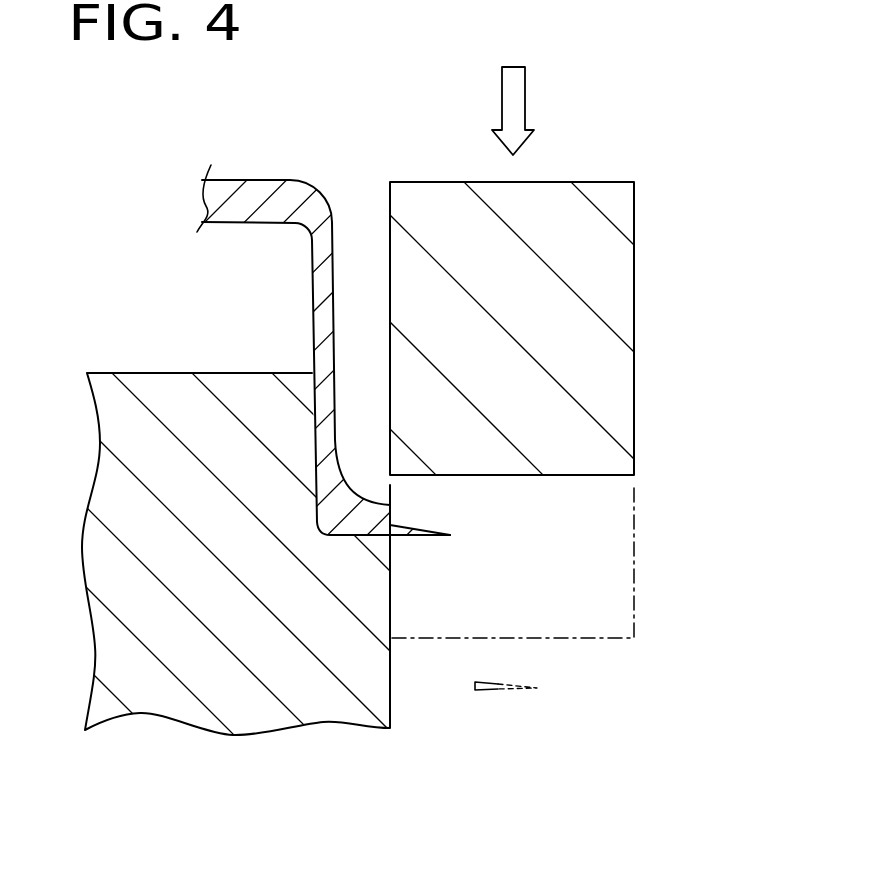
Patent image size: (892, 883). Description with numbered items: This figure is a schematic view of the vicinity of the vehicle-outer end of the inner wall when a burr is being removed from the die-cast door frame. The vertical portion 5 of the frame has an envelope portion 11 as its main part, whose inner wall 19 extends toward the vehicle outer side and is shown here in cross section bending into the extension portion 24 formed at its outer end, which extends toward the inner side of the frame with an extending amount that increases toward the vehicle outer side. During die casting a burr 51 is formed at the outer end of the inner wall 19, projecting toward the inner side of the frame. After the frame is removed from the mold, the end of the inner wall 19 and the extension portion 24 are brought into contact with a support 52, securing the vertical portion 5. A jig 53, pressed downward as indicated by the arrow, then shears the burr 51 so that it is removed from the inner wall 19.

The vertical portion 5 is at (298, 179).
The envelope portion 11 is at (230, 210).
The inner wall 19 is at (318, 328).
The extension portion 24 is at (353, 527).
The burr 51 is at (418, 533).
The support 52 is at (112, 410).
The jig 53 is at (636, 440).